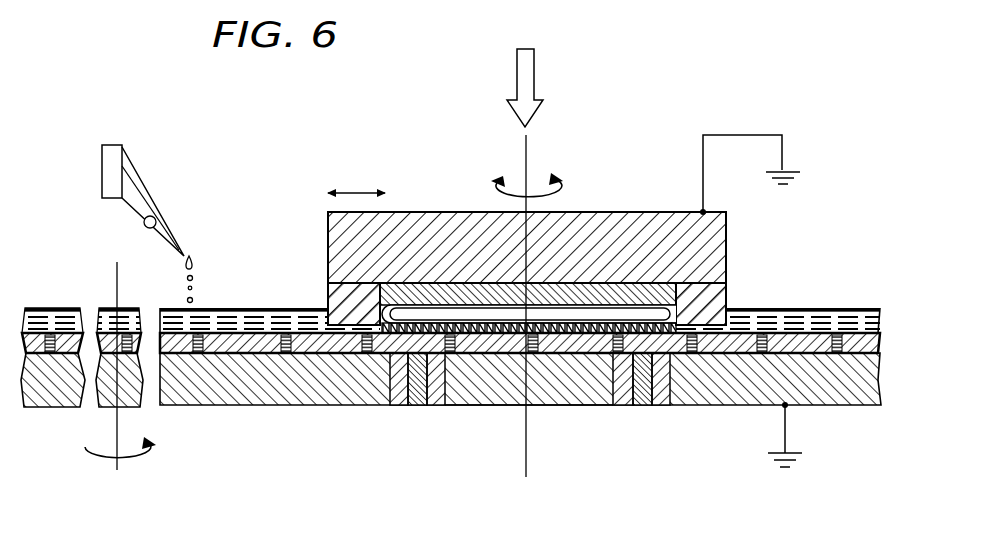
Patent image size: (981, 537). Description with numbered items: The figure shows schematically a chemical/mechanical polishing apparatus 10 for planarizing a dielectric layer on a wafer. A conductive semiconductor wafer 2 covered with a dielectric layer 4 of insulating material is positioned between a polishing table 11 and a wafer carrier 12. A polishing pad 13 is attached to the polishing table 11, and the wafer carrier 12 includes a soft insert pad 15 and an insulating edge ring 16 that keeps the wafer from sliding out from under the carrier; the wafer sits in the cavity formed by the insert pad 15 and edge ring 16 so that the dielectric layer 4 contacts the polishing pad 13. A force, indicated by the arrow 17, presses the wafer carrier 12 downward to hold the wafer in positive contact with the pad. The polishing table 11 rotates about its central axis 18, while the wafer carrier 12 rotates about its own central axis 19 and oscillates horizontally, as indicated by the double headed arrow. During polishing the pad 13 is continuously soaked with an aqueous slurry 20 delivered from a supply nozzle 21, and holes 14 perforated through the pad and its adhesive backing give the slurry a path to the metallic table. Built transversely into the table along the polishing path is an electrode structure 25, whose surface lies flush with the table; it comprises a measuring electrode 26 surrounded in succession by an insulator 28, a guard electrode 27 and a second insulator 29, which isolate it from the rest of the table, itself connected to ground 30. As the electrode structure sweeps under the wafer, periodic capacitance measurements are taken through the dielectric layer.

The semiconductor wafer 2 is at (635, 318).
The dielectric layer 4 is at (452, 312).
The apparatus 10 is at (690, 80).
The polishing table 11 is at (837, 405).
The wafer carrier 12 is at (727, 235).
The polishing pad 13 is at (233, 355).
The holes 14 is at (287, 333).
The insert pad 15 is at (403, 283).
The insulating edge ring 16 is at (727, 285).
The force arrow 17 is at (532, 72).
The central axis of polishing table 18 is at (115, 284).
The central axis of wafer carrier 19 is at (528, 153).
The aqueous slurry 20 is at (790, 308).
The supply nozzle 21 is at (100, 172).
The electrode structure 25 is at (553, 405).
The measuring electrode 26 is at (475, 405).
The guard electrode 27 is at (418, 405).
The insulator 28 is at (630, 405).
The insulator 29 is at (665, 405).
The ground 30 is at (778, 413).